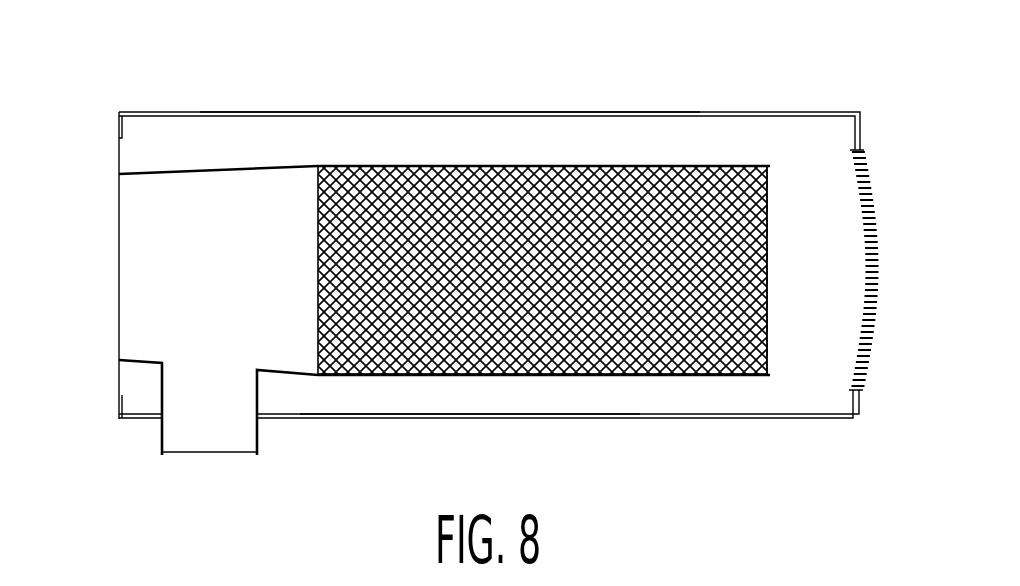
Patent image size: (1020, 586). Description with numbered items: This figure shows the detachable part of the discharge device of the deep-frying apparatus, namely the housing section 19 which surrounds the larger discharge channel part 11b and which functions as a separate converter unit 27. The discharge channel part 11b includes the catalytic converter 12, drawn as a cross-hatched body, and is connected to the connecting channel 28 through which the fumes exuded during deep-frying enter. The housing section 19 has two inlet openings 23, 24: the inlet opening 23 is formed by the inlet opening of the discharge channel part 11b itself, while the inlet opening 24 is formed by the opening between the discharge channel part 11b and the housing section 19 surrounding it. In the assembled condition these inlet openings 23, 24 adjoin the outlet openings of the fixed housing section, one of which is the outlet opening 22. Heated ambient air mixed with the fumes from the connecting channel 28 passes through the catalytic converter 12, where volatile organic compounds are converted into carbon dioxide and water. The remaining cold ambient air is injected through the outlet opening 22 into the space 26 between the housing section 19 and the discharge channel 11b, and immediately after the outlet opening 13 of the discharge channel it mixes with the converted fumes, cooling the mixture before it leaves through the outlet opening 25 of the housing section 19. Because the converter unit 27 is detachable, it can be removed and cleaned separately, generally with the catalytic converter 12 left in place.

The discharge channel part 11b is at (225, 165).
The catalytic converter 12 is at (318, 282).
The outlet opening 13 is at (767, 270).
The housing section 19 is at (652, 418).
The outlet opening 22 is at (427, 402).
The inlet opening 23 is at (140, 257).
The inlet opening 24 is at (118, 132).
The outlet opening 25 is at (876, 237).
The space 26 is at (428, 147).
The converter unit 27 is at (753, 420).
The connecting channel 28 is at (158, 438).